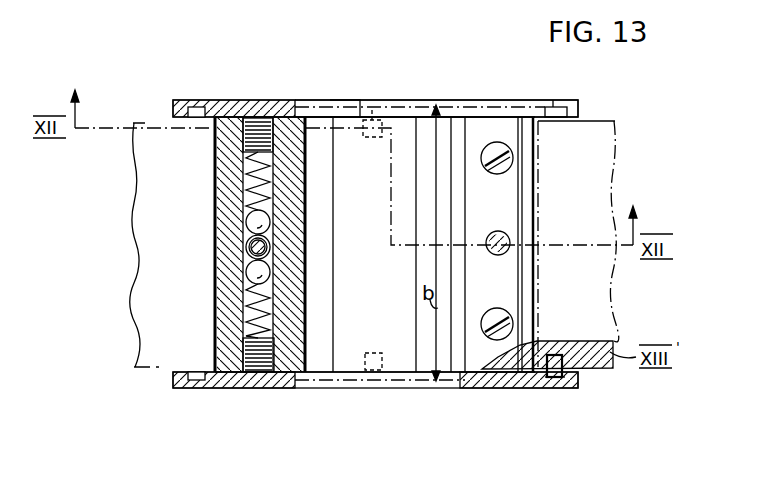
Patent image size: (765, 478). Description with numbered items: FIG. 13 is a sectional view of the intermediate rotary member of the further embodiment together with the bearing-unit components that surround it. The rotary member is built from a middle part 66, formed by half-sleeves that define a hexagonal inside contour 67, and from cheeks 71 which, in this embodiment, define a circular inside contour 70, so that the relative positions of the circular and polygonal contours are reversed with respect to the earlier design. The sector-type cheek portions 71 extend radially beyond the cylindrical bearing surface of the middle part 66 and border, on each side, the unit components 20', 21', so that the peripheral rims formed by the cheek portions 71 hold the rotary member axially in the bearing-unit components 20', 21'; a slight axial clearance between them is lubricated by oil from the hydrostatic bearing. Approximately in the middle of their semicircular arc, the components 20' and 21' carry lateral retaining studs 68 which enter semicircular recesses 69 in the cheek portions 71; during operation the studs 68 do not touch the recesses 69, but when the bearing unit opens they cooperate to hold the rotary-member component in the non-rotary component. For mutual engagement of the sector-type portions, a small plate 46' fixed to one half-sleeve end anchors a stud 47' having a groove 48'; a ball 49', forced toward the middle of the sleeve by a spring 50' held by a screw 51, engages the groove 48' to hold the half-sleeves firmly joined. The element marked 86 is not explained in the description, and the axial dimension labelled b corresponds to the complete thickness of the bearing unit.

The unit component 20' is at (113, 245).
The unit component 21' is at (137, 250).
The small plate 46' is at (550, 245).
The stud 47' is at (416, 259).
The groove 48' is at (215, 275).
The ball 49' is at (313, 210).
The spring 50' is at (313, 181).
The screw 51 is at (266, 122).
The middle part 66 is at (461, 133).
The hexagonal inside contour 67 is at (317, 372).
The stud 68 is at (377, 110).
The semicircular recess 69 is at (196, 100).
The circular inside contour 70 is at (421, 100).
The cheek 71 is at (245, 100).
The guide 86 is at (346, 100).